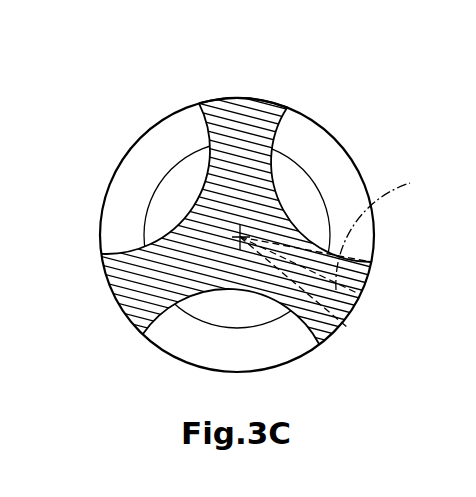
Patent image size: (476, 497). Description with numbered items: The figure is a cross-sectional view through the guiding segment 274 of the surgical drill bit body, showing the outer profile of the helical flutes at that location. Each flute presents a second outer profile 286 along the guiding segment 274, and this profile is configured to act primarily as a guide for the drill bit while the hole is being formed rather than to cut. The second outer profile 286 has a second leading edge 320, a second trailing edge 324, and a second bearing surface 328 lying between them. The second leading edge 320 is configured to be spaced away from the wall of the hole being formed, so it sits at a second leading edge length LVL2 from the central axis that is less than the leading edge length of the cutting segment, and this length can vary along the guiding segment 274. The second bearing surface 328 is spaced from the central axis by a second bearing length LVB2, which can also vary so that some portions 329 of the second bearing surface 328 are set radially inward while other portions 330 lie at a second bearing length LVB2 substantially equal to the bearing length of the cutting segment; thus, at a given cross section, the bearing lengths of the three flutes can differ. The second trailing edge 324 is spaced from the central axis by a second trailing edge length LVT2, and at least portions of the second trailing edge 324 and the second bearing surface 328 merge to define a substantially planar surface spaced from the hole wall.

The guiding segment 274 is at (98, 144).
The second outer profile 286 is at (285, 65).
The second leading edge 320 is at (160, 118).
The second trailing edge 324 is at (287, 110).
The second bearing surface 328 is at (243, 98).
The portions of the second bearing surface 329 is at (220, 100).
The portions of the second bearing surface 330 is at (323, 343).
The second leading edge length LVL2 is at (401, 230).
The second bearing length LVB2 is at (372, 250).
The second trailing edge length LVT2 is at (347, 327).